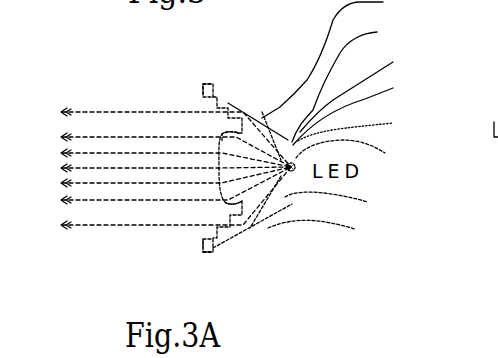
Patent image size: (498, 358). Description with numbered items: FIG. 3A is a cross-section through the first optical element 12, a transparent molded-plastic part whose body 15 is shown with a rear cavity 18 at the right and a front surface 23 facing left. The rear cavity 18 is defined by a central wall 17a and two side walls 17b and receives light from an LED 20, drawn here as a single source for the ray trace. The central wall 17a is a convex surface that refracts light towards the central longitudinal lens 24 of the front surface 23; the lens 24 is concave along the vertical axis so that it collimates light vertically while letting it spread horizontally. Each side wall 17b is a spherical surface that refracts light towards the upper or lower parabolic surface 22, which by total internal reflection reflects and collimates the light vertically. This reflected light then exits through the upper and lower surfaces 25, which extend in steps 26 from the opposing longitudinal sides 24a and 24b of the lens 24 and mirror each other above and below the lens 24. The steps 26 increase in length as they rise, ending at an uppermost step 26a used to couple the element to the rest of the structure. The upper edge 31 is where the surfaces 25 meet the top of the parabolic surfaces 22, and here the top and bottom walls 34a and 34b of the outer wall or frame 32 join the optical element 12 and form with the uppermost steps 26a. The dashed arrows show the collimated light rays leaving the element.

The first optical element 12 is at (228, 103).
The body 15 is at (377, 32).
The central wall 17a is at (358, 113).
The side wall 17b is at (354, 131).
The rear cavity 18 is at (357, 127).
The LED 20 is at (349, 152).
The parabolic surface 22 is at (330, 119).
The front surface 23 is at (215, 106).
The central longitudinal lens 24 is at (220, 177).
The longitudinal side of lens 24a is at (226, 136).
The longitudinal side of lens 24b is at (230, 203).
The upper and lower surfaces 25 is at (222, 125).
The step 26 is at (260, 99).
The uppermost step 26a is at (203, 87).
The upper edge 31 is at (212, 84).
The outer wall or frame 32 is at (212, 253).
The top wall 34a is at (202, 96).
The bottom wall 34b is at (203, 247).